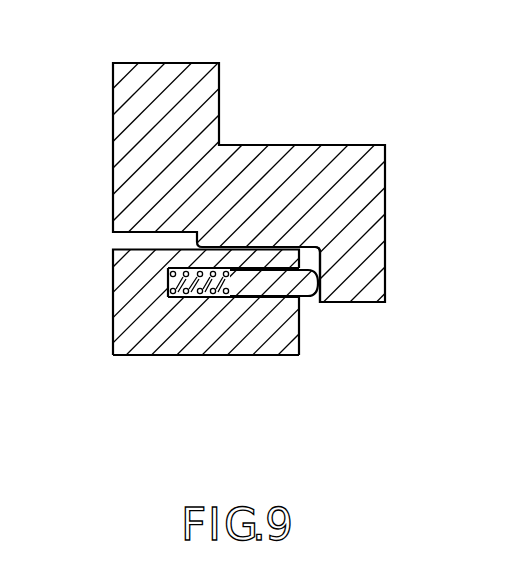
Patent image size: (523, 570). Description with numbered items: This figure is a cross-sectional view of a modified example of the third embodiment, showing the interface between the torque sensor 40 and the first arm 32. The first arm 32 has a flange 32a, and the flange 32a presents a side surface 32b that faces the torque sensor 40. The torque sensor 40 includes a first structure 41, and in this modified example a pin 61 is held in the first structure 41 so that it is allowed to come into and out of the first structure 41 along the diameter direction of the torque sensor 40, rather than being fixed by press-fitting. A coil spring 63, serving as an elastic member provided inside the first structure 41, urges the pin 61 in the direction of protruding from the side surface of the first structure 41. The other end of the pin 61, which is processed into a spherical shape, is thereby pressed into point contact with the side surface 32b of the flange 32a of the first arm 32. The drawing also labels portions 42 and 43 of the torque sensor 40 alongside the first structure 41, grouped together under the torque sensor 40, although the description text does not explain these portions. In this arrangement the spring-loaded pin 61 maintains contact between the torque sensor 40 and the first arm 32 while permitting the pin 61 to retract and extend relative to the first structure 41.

The first arm 32 is at (195, 68).
The flange 32a is at (348, 154).
The side surface 32b is at (311, 253).
The torque sensor 40 is at (155, 424).
The first structure 41 is at (257, 338).
The second layer 42 is at (137, 338).
The intermediate layer 43 is at (193, 338).
The pin 61 is at (277, 293).
The coil spring 63 is at (182, 272).